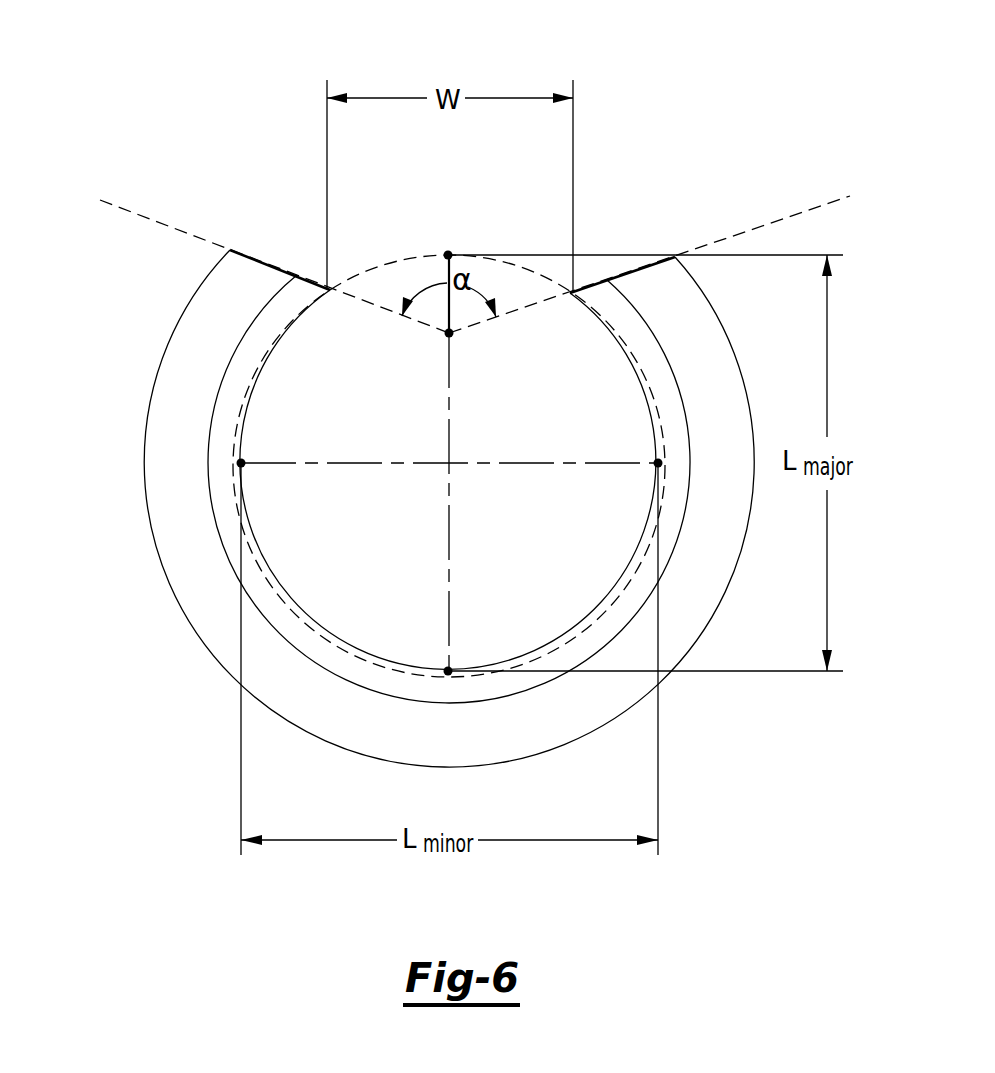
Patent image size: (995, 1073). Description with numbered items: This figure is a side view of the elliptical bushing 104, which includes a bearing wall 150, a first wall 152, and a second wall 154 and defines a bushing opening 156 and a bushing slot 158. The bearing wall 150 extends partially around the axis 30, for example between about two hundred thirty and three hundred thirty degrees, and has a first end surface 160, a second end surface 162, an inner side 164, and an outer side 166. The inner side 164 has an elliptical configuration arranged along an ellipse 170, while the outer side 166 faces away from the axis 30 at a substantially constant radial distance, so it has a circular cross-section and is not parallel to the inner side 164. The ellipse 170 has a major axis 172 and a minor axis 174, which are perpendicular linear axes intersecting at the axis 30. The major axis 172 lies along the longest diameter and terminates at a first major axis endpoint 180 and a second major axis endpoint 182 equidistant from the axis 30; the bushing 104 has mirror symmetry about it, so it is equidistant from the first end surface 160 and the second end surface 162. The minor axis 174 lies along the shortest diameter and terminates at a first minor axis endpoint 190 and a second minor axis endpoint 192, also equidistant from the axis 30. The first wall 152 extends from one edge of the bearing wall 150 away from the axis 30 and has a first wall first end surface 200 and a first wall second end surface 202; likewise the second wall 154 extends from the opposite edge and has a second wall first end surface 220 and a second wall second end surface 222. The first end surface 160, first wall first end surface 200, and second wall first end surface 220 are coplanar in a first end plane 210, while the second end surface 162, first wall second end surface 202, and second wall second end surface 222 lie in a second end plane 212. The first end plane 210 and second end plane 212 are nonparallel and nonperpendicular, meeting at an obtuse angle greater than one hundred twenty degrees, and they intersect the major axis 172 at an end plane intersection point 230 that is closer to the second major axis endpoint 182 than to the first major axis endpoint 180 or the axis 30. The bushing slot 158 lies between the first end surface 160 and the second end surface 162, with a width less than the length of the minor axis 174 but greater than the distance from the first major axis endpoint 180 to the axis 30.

The axis 30 is at (449, 462).
The bushing 104 is at (277, 113).
The bearing wall 150 is at (448, 479).
The first wall 152 is at (211, 527).
The second wall 154 is at (190, 622).
The bushing opening 156 is at (523, 527).
The bushing slot 158 is at (592, 218).
The first end surface 160 is at (330, 290).
The second end surface 162 is at (570, 292).
The inner side 164 is at (310, 620).
The outer side 166 is at (407, 433).
The ellipse 170 is at (398, 257).
The major axis 172 is at (450, 425).
The minor axis 174 is at (569, 462).
The first major axis endpoint 180 is at (448, 671).
The second major axis endpoint 182 is at (450, 254).
The first minor axis endpoint 190 is at (241, 463).
The second minor axis endpoint 192 is at (658, 463).
The first wall first end surface 200 is at (300, 268).
The first wall second end surface 202 is at (605, 279).
The first end plane 210 is at (159, 224).
The second end plane 212 is at (752, 228).
The second wall first end surface 220 is at (256, 260).
The second wall second end surface 222 is at (645, 266).
The end plane intersection point 230 is at (446, 336).